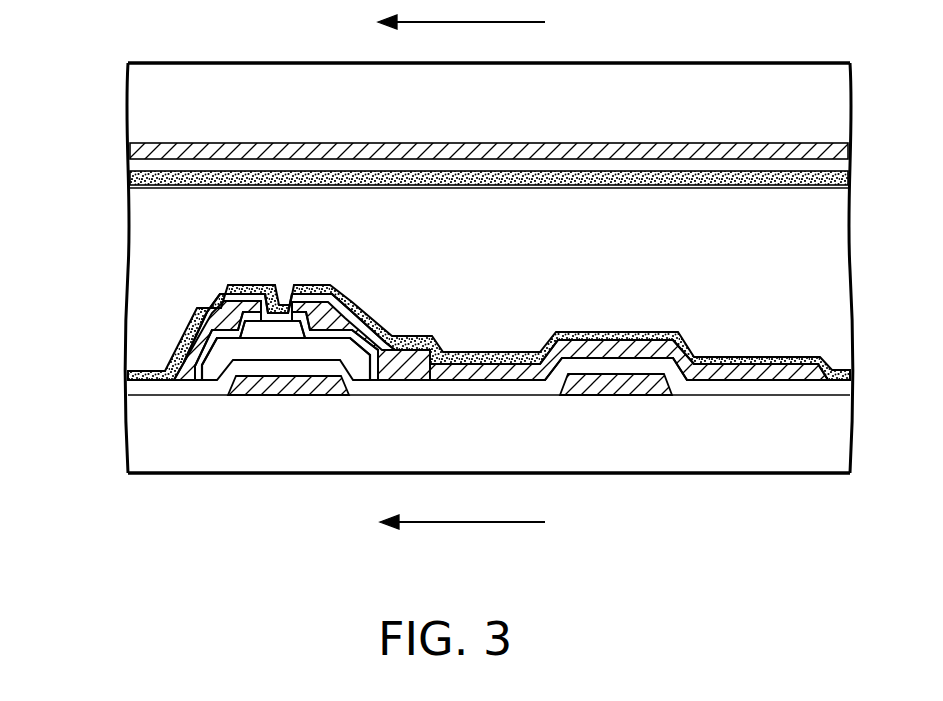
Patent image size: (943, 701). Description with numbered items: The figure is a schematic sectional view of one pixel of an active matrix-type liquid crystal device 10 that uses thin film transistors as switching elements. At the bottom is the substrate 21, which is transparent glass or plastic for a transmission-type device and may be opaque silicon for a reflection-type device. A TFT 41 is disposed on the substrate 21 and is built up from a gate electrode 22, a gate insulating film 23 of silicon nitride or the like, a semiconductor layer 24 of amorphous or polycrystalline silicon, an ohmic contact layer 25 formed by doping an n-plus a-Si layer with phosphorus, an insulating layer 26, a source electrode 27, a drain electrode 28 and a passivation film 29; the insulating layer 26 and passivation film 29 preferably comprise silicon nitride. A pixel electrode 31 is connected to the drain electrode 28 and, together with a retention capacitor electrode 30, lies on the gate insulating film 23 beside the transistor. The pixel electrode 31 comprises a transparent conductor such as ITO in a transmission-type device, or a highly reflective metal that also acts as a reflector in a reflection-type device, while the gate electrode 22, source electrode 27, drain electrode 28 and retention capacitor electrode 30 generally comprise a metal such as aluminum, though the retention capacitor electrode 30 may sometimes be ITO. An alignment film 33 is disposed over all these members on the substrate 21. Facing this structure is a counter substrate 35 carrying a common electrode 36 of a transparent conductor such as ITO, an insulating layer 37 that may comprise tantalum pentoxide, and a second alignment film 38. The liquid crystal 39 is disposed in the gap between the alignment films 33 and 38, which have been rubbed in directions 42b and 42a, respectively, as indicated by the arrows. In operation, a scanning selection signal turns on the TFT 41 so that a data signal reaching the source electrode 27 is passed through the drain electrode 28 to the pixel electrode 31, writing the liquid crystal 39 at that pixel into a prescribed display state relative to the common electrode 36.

The liquid crystal device 10 is at (690, 57).
The substrate 21 is at (130, 428).
The gate electrode 22 is at (287, 397).
The gate insulating film 23 is at (218, 386).
The semiconductor layer 24 is at (358, 382).
The ohmic contact layer 25 is at (375, 360).
The insulating layer 26 is at (282, 331).
The source electrode 27 is at (240, 292).
The drain electrode 28 is at (366, 301).
The passivation film 29 is at (334, 300).
The retention capacitor electrode 30 is at (624, 396).
The pixel electrode 31 is at (718, 381).
The alignment film 33 is at (658, 332).
The counter substrate 35 is at (138, 99).
The common electrode 36 is at (130, 150).
The insulating layer 37 is at (126, 182).
The alignment film 38 is at (490, 188).
The liquid crystal layer 39 is at (142, 281).
The TFT 41 is at (489, 407).
The rubbing direction 42a is at (508, 22).
The rubbing direction 42b is at (505, 523).